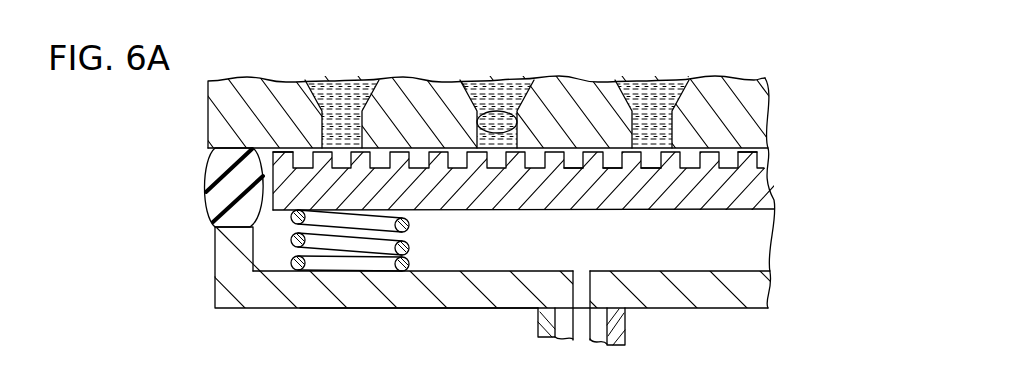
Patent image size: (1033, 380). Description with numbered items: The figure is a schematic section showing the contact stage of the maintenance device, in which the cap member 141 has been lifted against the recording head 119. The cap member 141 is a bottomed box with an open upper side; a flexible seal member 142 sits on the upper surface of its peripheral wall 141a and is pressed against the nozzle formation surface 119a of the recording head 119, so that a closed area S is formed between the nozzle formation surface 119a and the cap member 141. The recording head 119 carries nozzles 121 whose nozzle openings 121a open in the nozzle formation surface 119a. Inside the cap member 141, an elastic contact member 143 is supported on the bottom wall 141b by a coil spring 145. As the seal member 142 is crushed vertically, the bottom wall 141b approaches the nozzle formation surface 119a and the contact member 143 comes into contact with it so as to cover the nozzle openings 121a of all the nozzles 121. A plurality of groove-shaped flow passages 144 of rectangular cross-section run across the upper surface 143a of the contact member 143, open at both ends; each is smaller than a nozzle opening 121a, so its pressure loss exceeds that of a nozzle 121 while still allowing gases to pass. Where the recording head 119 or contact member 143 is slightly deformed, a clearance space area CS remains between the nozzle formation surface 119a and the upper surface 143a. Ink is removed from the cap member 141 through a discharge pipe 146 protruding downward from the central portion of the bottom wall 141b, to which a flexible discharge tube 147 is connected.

The recording head 119 is at (217, 116).
The nozzle formation surface 119a is at (210, 152).
The nozzle 121 is at (361, 85).
The nozzle opening 121a is at (343, 138).
The clearance space area CS is at (268, 152).
The seal member 142 is at (208, 174).
The contact member 143 is at (772, 177).
The upper surface 143a is at (770, 144).
The flow passage 144 is at (654, 160).
The coil spring 145 is at (410, 248).
The cap member 141 is at (268, 298).
The peripheral wall 141a is at (215, 258).
The bottom wall 141b is at (418, 310).
The discharge pipe 146 is at (598, 327).
The discharge tube 147 is at (540, 324).
The closed area S is at (714, 257).